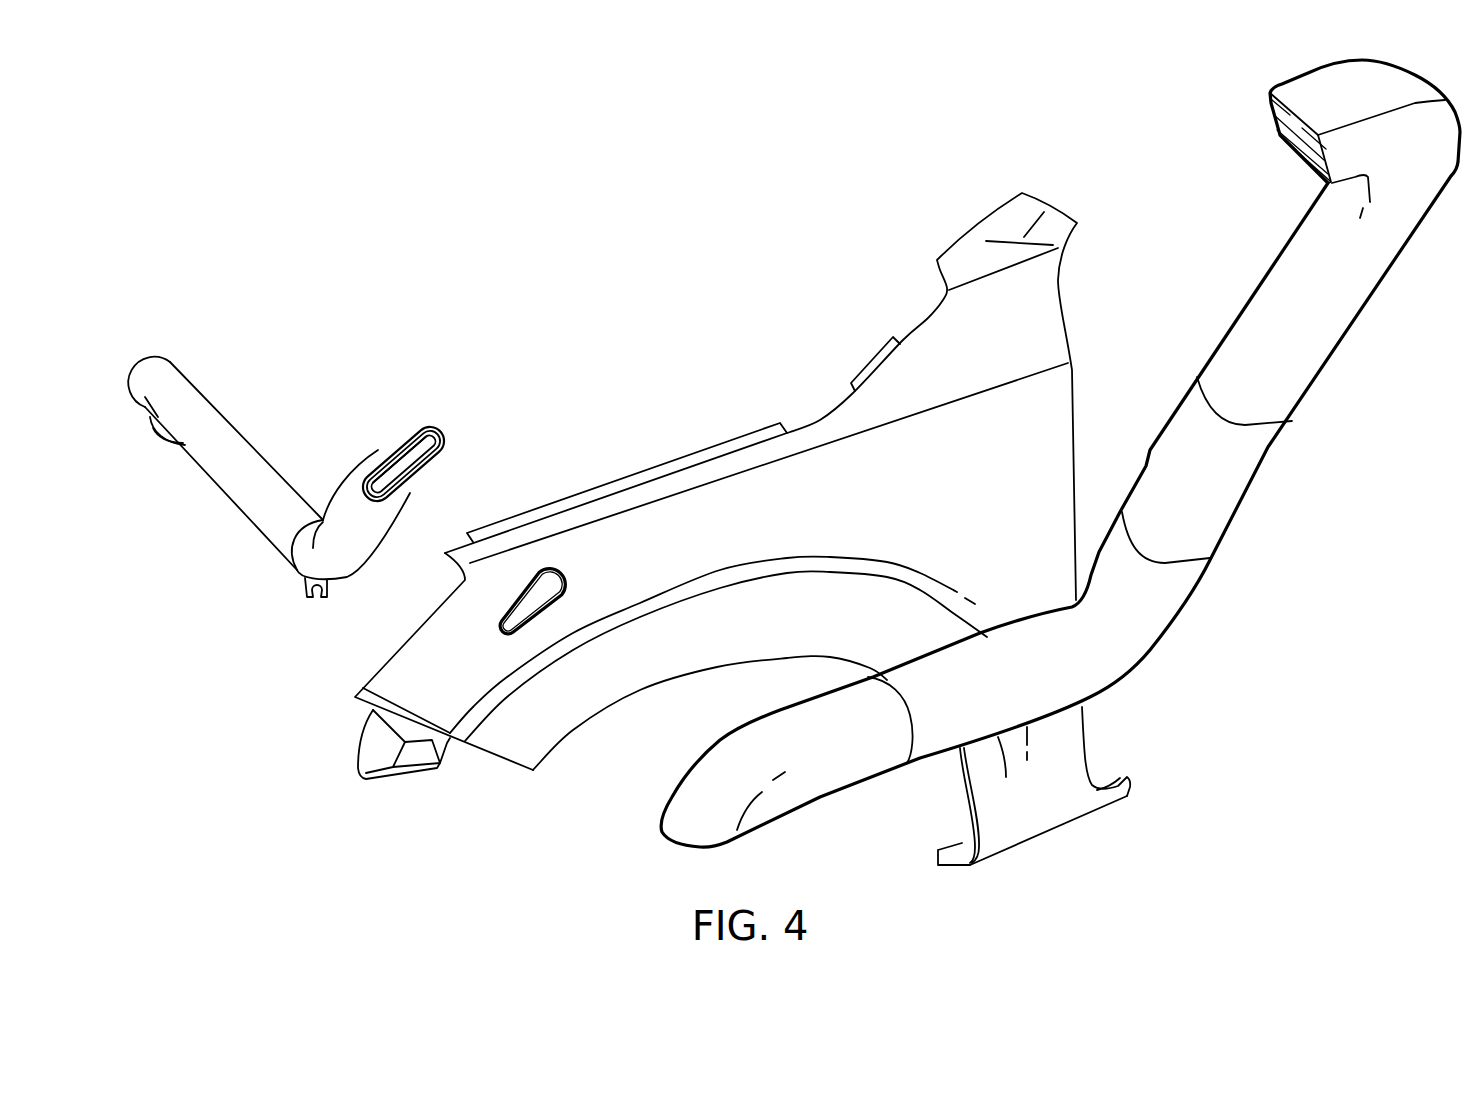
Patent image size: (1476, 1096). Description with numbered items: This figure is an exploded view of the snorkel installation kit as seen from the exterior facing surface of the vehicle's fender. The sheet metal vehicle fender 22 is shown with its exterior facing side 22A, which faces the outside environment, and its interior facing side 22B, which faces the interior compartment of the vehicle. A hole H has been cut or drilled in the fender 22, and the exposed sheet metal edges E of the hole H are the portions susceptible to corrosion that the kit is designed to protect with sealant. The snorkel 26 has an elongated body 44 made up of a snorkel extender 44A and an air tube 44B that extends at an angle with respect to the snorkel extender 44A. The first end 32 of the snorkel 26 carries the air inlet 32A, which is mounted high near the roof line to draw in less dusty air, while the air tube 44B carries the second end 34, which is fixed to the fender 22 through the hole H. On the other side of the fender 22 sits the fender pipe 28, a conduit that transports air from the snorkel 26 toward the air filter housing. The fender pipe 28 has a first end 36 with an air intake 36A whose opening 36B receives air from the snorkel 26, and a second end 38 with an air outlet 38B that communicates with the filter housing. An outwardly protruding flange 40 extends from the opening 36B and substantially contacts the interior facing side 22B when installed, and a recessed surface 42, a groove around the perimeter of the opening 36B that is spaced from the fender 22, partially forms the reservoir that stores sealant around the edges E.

The vehicle fender 22 is at (695, 486).
The exterior facing side 22A is at (780, 516).
The interior facing side 22B is at (402, 650).
The hole H is at (550, 580).
The edges E is at (536, 627).
The snorkel 26 is at (1032, 448).
The fender pipe 28 is at (291, 434).
The second end 38 is at (144, 453).
The air outlet 38B is at (177, 447).
The first end 36 is at (399, 446).
The air intake 36A is at (418, 467).
The opening 36B is at (392, 470).
The outwardly protruding flange 40 is at (435, 450).
The recessed surface 42 is at (418, 427).
The first end 32 is at (1324, 107).
The air inlet 32A is at (1295, 133).
The second end 34 is at (680, 777).
The elongated body 44 is at (1032, 448).
The snorkel extender 44A is at (1352, 327).
The air tube 44B is at (1034, 786).